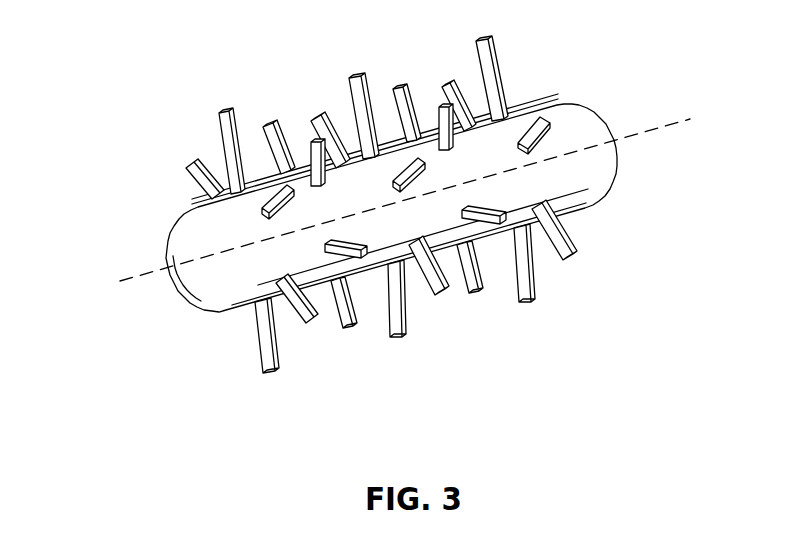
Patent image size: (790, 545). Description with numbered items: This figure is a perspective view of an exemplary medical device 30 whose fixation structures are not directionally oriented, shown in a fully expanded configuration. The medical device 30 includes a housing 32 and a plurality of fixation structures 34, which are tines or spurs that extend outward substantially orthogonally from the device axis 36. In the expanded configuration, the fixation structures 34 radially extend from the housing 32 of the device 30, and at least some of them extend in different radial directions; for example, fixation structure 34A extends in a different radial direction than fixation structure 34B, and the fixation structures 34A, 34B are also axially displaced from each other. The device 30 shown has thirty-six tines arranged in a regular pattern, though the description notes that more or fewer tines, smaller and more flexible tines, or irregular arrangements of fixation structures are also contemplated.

The medical device 30 is at (348, 202).
The housing 32 is at (560, 112).
The fixation structures 34 is at (367, 214).
The fixation structure 34A is at (262, 213).
The fixation structure 34B is at (525, 283).
The axis of rotation 36 is at (652, 114).